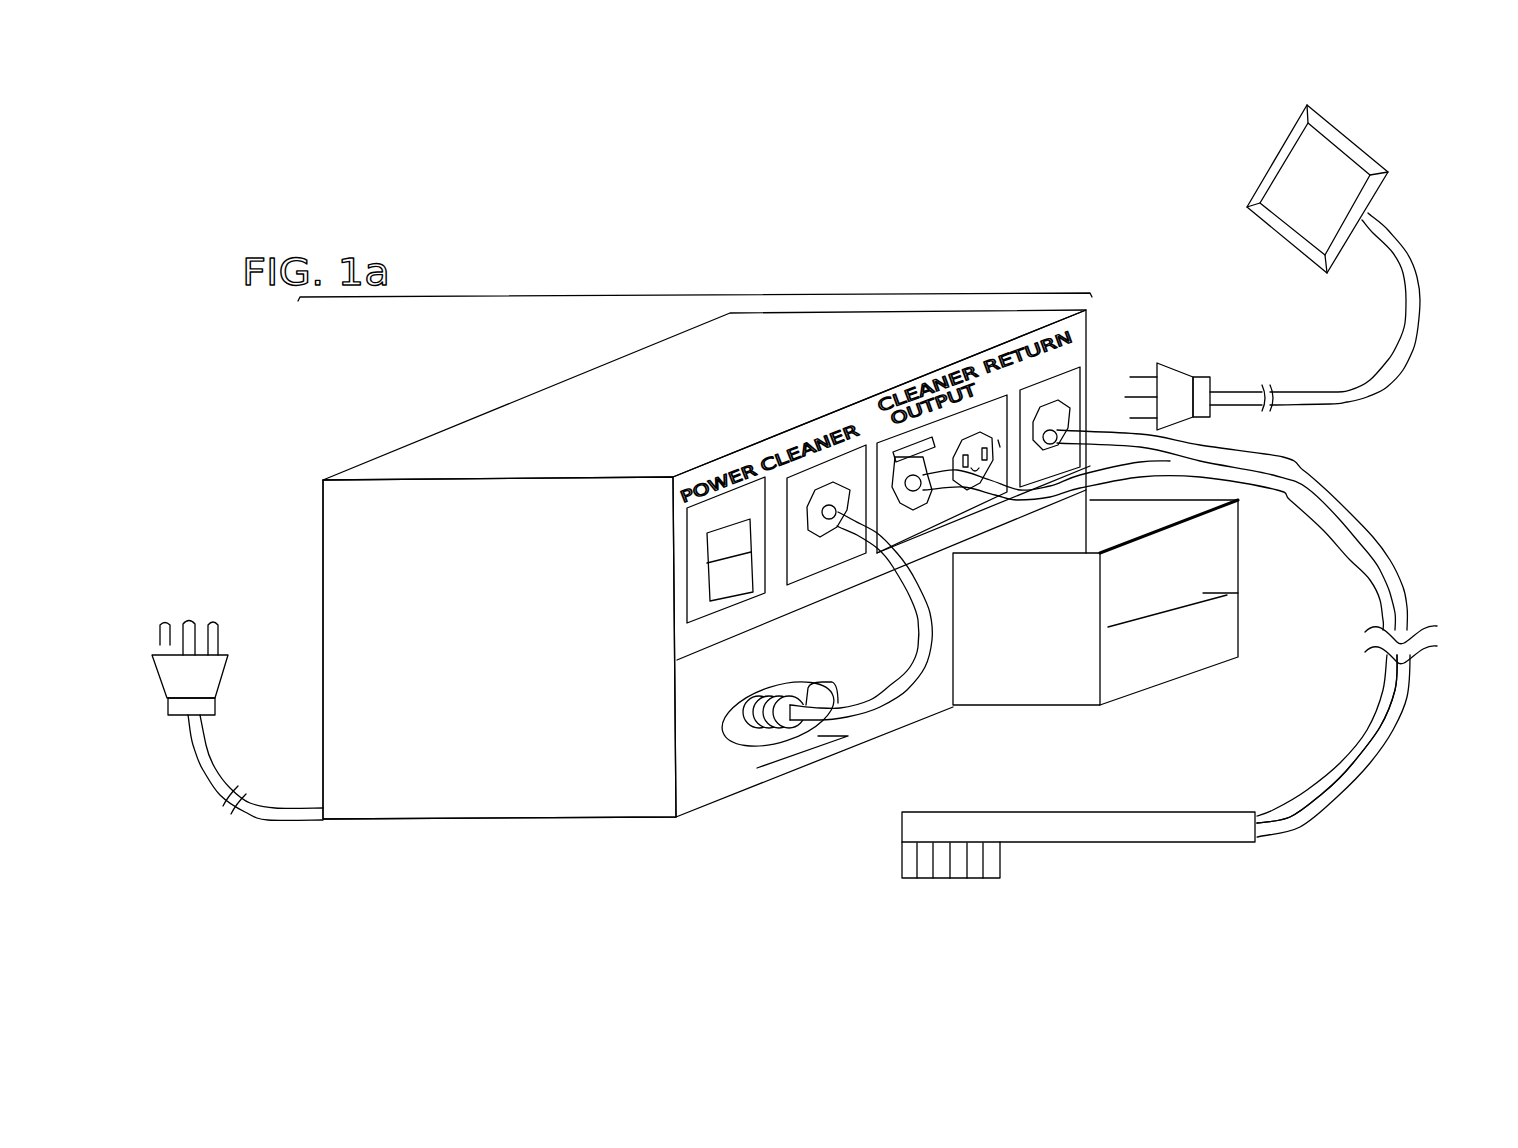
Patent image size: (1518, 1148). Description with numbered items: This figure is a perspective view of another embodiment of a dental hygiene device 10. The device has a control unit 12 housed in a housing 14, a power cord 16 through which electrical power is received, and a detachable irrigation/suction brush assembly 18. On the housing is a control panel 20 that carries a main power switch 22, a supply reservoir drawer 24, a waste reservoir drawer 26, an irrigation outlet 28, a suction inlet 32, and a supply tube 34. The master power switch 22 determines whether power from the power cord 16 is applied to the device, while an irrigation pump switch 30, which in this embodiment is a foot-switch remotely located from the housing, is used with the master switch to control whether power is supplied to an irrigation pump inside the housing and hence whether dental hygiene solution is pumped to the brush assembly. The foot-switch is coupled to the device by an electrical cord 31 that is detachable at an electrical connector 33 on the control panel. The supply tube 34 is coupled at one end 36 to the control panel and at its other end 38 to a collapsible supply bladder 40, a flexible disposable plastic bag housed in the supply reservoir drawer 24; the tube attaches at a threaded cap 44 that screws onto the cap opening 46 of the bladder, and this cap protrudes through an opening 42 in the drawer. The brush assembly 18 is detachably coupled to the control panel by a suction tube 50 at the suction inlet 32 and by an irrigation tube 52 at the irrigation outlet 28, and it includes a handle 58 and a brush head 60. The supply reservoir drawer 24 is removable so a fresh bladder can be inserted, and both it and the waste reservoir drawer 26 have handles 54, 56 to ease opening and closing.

The dental hygiene device 10 is at (1133, 305).
The control unit 12 is at (752, 295).
The housing 14 is at (477, 625).
The power cord 16 is at (215, 762).
The irrigation/suction brush assembly 18 is at (1191, 777).
The control panel 20 is at (708, 470).
The main power switch 22 is at (737, 606).
The supply reservoir drawer 24 is at (822, 672).
The waste reservoir drawer 26 is at (1095, 602).
The irrigation outlet 28 is at (908, 501).
The irrigation pump switch 30 is at (1270, 165).
The electrical cord 31 is at (1243, 387).
The suction inlet 32 is at (1043, 417).
The electrical connector 33 is at (981, 441).
The supply tube 34 is at (915, 593).
The one end of supply tube 36 is at (840, 489).
The other end of supply tube 38 is at (808, 696).
The collapsible supply bladder 40 is at (818, 697).
The opening in supply reservoir drawer 42 is at (752, 729).
The cap 44 is at (778, 696).
The cap opening 46 is at (743, 712).
The suction tube 50 is at (1355, 785).
The irrigation tube 52 is at (1339, 760).
The handle of supply reservoir drawer 54 is at (722, 782).
The handle of waste reservoir drawer 56 is at (1173, 619).
The handle 58 is at (1255, 858).
The brush head 60 is at (950, 826).